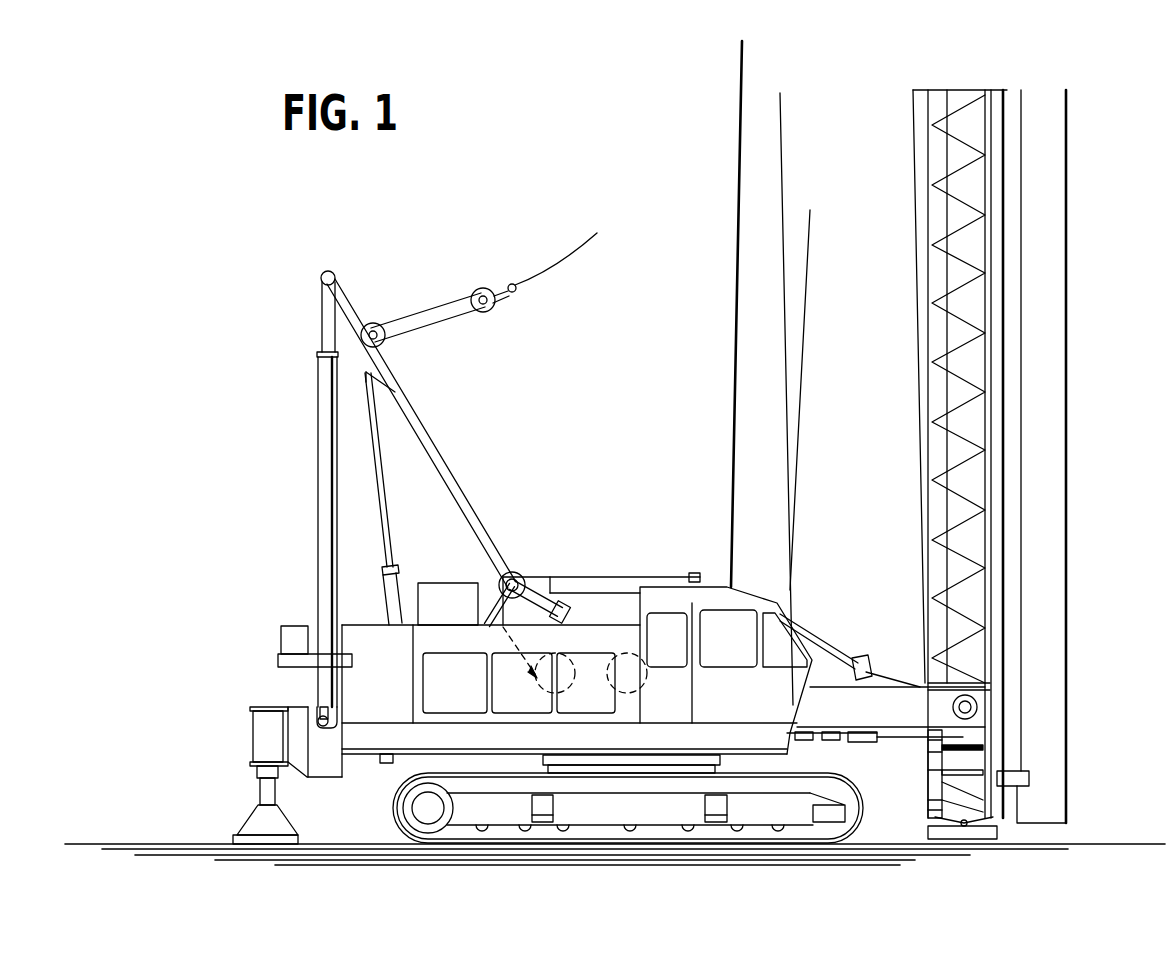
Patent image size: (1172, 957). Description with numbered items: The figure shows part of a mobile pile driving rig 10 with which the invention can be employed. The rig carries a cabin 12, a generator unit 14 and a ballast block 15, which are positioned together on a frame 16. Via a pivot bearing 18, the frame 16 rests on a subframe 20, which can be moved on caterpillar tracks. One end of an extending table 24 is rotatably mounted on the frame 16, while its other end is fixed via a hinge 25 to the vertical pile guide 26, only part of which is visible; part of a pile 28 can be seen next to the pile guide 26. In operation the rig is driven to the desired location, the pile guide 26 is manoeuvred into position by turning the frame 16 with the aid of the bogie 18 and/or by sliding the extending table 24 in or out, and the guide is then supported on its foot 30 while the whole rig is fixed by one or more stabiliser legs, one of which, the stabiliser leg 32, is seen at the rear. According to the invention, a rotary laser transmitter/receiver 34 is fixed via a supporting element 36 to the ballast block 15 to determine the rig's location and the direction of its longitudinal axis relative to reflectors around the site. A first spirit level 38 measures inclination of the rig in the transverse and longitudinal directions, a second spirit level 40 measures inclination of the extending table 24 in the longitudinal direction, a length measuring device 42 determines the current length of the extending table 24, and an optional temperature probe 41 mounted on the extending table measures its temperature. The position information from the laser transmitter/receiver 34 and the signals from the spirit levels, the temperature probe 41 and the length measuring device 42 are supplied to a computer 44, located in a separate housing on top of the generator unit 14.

The mobile pile driving rig 10 is at (492, 268).
The cabin 12 is at (666, 592).
The generator unit 14 is at (575, 575).
The ballast block 15 is at (370, 637).
The frame 16 is at (456, 740).
The pivot bearing 18 is at (670, 770).
The subframe 20 is at (598, 815).
The extending table 24 is at (888, 700).
The hinge 25 is at (978, 705).
The vertical pile guide 26 is at (935, 262).
The pile 28 is at (1052, 406).
The foot 30 is at (982, 840).
The stabiliser leg 32 is at (265, 735).
The rotary laser transmitter/receiver 34 is at (281, 640).
The supporting element 36 is at (282, 661).
The first spirit level 38 is at (384, 764).
The second spirit level 40 is at (873, 744).
The temperature probe 41 is at (802, 741).
The length measuring device 42 is at (835, 742).
The computer 44 is at (442, 595).